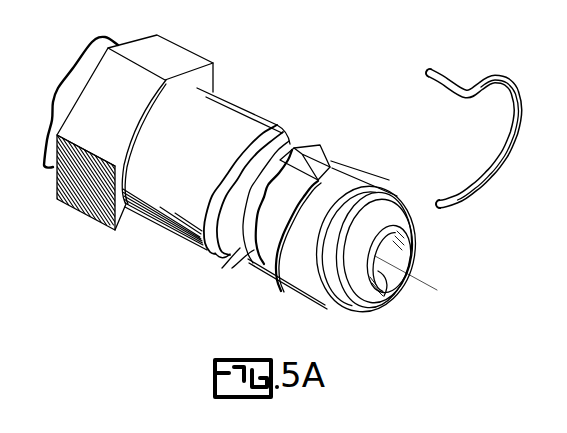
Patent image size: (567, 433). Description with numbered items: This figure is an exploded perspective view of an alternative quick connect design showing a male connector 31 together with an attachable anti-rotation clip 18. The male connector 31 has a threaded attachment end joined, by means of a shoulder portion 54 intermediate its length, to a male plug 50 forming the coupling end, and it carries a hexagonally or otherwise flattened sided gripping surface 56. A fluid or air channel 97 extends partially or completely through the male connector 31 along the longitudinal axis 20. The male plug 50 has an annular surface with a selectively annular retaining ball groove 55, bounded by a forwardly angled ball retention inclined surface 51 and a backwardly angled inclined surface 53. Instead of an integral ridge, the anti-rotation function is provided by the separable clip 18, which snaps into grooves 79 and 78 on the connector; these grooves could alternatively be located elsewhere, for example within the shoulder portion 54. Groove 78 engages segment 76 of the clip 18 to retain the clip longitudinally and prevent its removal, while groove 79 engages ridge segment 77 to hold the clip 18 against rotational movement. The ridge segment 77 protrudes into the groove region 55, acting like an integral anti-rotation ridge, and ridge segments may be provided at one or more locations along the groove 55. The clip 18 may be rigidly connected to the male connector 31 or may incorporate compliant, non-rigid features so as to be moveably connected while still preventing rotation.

The clip 18 is at (493, 60).
The axis 20 is at (412, 281).
The male connector 31 is at (355, 326).
The male plug 50 is at (260, 250).
The forwardly angled ball retention inclined surface 51 is at (232, 264).
The backwardly angled inclined surface 53 is at (208, 244).
The shoulder portion 54 is at (223, 122).
The annular retaining ball groove 55 is at (270, 153).
The gripping surface 56 is at (160, 53).
The segment 76 is at (465, 205).
The ridge segment 77 is at (442, 70).
The groove 78 is at (276, 273).
The groove 79 is at (326, 151).
The air channel 97 is at (390, 287).